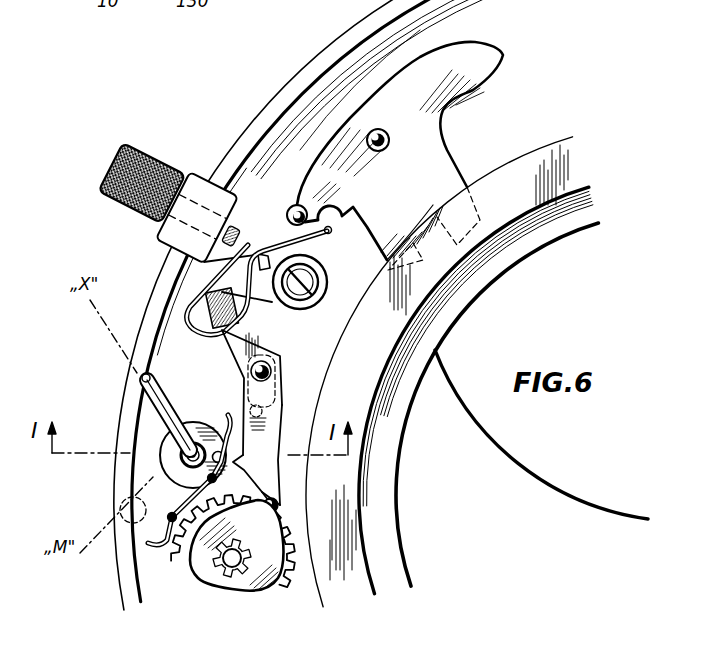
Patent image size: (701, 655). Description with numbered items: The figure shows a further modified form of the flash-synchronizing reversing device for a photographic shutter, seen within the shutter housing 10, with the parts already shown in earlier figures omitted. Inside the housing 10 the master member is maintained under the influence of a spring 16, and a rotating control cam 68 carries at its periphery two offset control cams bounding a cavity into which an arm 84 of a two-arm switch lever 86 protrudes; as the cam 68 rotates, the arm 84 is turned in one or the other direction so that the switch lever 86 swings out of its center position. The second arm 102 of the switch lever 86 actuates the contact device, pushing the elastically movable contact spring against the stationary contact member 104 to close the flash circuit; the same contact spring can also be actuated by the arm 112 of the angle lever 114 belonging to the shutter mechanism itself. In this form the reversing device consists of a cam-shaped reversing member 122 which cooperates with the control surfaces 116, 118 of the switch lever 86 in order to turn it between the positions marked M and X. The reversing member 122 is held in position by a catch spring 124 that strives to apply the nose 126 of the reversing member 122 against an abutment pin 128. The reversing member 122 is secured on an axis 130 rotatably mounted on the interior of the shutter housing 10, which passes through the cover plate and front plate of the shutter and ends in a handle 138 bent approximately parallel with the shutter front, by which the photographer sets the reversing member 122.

The shutter housing 10 is at (243, 140).
The spring 16 is at (325, 236).
The control cam 68 is at (258, 586).
The arm 84 is at (277, 506).
The two-arm switch lever 86 is at (248, 367).
The second arm 102 is at (210, 297).
The stationary contact member 104 is at (263, 272).
The arm 112 is at (292, 211).
The angle lever 114 is at (420, 133).
The control surface 116 is at (263, 482).
The control surface 118 is at (250, 451).
The cam-shaped reversing member 122 is at (208, 420).
The catch spring 124 is at (170, 502).
The nose 126 is at (242, 514).
The abutment pin 128 is at (211, 481).
The axis 130 is at (183, 452).
The handle 138 is at (165, 403).